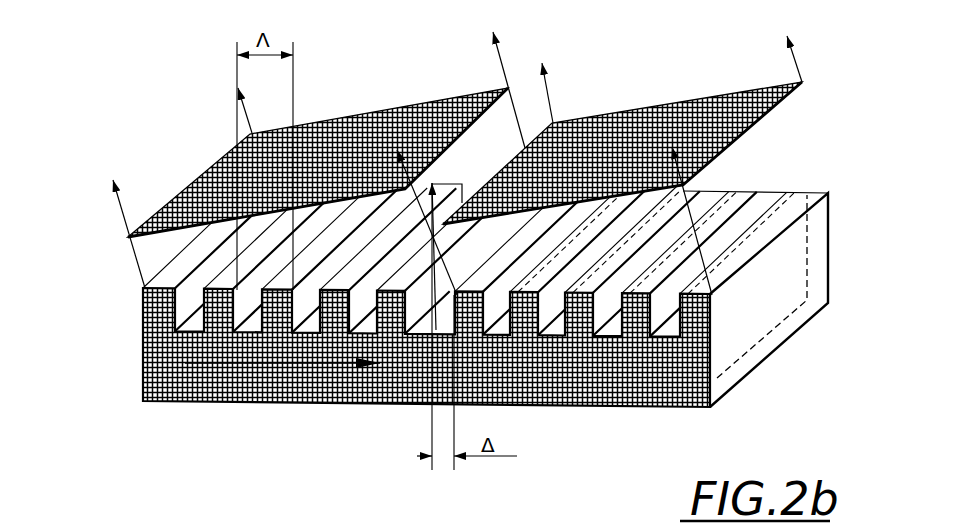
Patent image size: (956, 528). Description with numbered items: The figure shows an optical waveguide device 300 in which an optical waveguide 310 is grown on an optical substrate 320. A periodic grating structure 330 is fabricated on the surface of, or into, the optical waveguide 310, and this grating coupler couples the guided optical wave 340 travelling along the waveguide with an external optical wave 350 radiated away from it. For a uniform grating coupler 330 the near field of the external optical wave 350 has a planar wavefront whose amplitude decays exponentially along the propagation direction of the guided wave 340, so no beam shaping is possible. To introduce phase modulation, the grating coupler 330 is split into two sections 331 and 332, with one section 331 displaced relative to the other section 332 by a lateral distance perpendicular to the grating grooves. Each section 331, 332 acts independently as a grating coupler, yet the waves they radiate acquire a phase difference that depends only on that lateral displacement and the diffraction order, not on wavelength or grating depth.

The optical waveguide device 300 is at (737, 342).
The optical waveguide 310 is at (145, 313).
The optical substrate 320 is at (812, 232).
The periodic grating structure 330 is at (750, 193).
The first grating section 331 is at (627, 113).
The second grating section 332 is at (338, 135).
The guided optical wave 340 is at (200, 174).
The external optical wave 350 is at (143, 374).